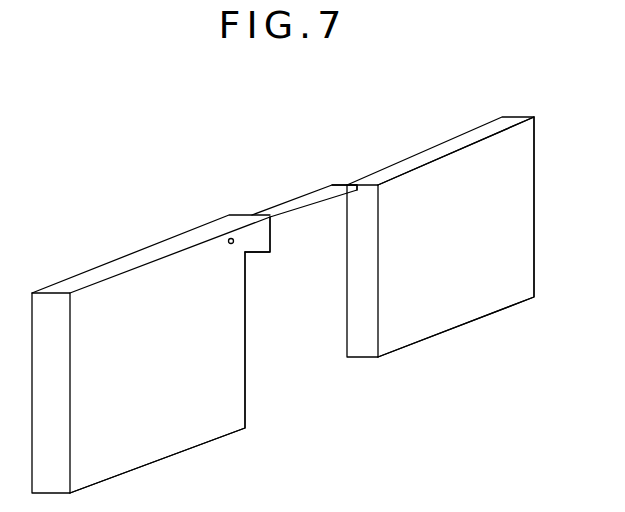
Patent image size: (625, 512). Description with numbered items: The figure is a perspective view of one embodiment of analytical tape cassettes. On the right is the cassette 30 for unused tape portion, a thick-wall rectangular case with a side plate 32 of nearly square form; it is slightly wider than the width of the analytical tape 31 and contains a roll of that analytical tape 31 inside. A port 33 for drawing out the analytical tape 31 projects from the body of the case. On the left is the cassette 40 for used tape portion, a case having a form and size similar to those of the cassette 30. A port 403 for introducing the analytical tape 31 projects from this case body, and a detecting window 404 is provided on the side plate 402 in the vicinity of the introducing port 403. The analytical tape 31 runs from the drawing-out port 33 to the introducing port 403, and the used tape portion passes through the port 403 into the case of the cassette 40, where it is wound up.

The cassette for unused tape portion 30 is at (450, 210).
The analytical tape 31 is at (291, 203).
The side plate 32 is at (530, 246).
The port for drawing out the analytical tape 33 is at (352, 192).
The cassette for used tape portion 40 is at (177, 334).
The side plate 402 is at (243, 400).
The port for introducing the analytical tape 403 is at (262, 253).
The detecting window 404 is at (230, 238).